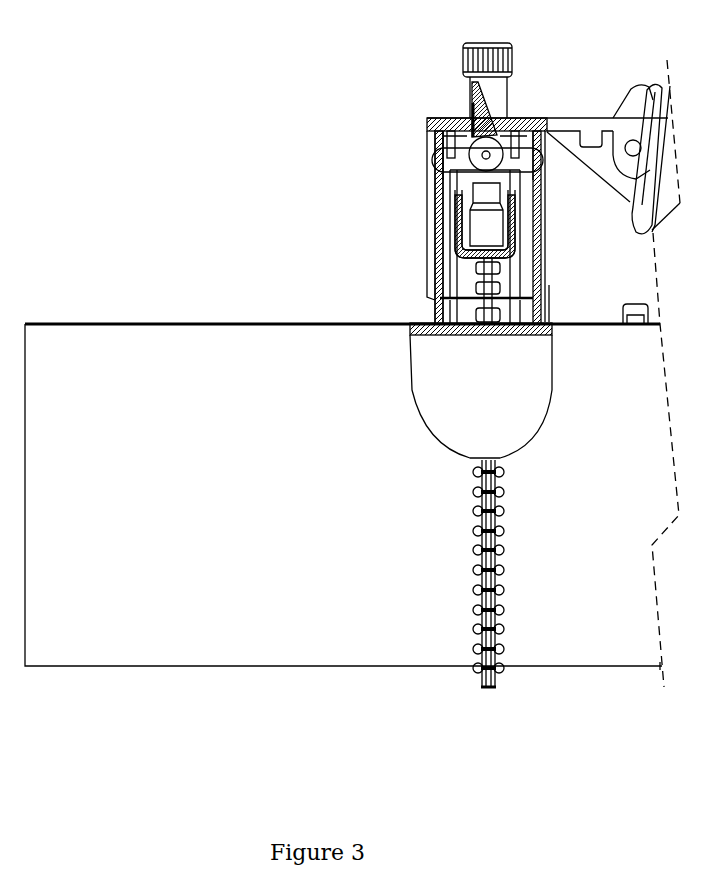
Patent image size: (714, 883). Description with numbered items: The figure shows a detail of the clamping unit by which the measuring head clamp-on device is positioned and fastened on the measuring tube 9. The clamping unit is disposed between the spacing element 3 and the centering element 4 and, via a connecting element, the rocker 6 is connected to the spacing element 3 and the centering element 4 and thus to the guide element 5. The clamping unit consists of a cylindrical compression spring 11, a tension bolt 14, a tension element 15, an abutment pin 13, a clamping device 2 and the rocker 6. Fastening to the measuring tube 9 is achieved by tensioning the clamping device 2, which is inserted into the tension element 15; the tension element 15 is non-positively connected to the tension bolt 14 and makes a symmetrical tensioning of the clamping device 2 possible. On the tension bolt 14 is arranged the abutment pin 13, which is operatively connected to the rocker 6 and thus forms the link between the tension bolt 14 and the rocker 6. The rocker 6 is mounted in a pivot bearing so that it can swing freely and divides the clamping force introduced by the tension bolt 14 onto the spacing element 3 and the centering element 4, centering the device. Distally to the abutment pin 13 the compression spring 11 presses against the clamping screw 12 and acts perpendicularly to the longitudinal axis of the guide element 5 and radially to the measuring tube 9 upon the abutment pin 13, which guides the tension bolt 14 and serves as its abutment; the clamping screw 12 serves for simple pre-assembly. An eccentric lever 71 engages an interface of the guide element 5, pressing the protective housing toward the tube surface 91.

The clamping device 2 is at (473, 315).
The spacing element 3 is at (530, 274).
The centering element 4 is at (443, 248).
The guide element 5 is at (538, 260).
The rocker 6 is at (455, 161).
The measuring tube 9 is at (576, 626).
The compression spring 11 is at (462, 105).
The clamping screw 12 is at (463, 50).
The abutment pin 13 is at (477, 155).
The tension bolt 14 is at (483, 193).
The tension element 15 is at (583, 253).
The eccentric lever 71 is at (646, 108).
The tube surface 91 is at (178, 672).